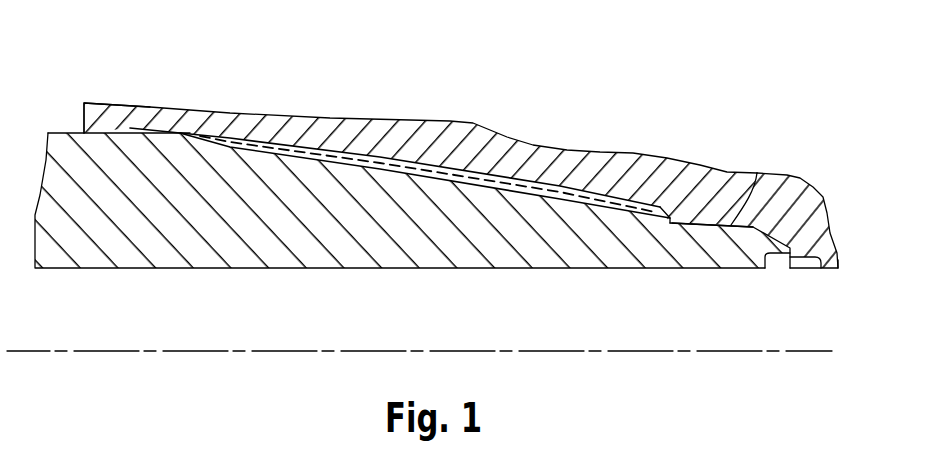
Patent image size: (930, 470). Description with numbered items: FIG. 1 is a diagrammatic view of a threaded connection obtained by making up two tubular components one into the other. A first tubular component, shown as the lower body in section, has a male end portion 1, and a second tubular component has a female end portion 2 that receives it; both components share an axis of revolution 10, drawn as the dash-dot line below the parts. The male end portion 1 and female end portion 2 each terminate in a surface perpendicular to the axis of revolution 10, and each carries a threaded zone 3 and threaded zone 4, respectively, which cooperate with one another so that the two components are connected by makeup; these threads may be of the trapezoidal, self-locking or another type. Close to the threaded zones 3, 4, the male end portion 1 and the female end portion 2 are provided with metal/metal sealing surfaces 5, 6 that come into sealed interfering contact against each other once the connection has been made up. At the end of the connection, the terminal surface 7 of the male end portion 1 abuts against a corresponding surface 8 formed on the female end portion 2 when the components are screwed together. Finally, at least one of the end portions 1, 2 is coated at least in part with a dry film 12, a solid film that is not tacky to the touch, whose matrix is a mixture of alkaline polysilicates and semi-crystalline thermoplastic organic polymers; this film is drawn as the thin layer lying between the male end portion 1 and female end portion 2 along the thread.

The male end portion 1 is at (130, 216).
The female end portion 2 is at (97, 130).
The threaded zone 3 is at (254, 150).
The threaded zone 4 is at (307, 134).
The metal/metal sealing surface 5 is at (705, 228).
The metal/metal sealing surface 6 is at (757, 173).
The terminal surface 7 is at (765, 268).
The corresponding surface 8 is at (820, 268).
The axis of revolution 10 is at (745, 352).
The dry film 12 is at (503, 178).